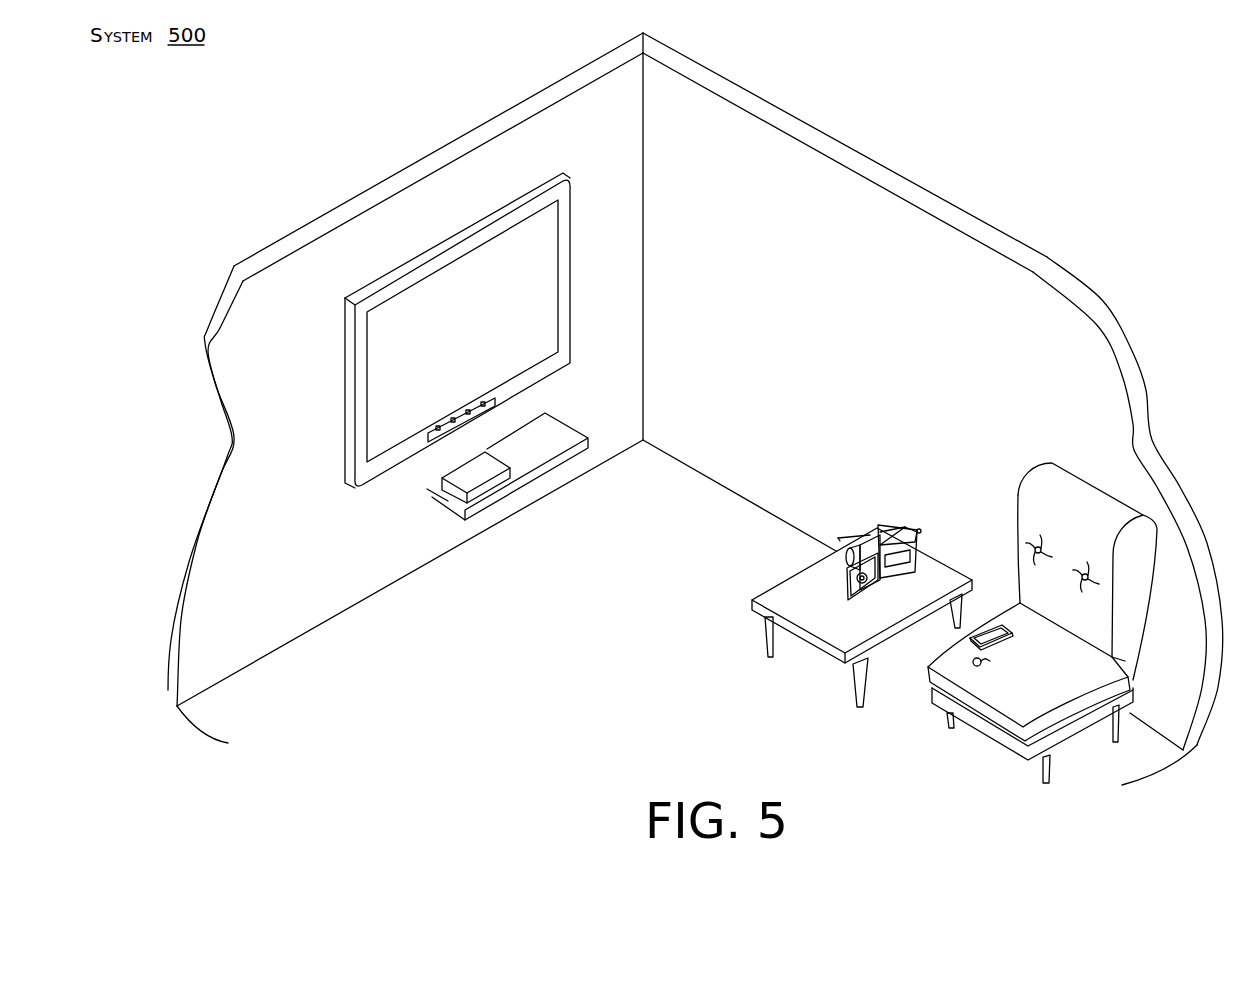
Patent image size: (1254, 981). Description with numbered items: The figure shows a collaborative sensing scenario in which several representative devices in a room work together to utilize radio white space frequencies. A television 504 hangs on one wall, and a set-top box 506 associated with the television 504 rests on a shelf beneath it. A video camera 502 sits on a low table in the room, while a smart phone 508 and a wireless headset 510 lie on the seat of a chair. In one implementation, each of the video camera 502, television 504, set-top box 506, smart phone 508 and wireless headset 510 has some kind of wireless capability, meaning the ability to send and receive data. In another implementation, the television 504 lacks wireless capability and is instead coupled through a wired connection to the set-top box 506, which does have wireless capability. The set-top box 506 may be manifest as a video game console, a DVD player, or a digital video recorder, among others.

The video camera 502 is at (846, 600).
The television 504 is at (564, 173).
The set-top box 506 is at (448, 503).
The smart phone 508 is at (1010, 632).
The wireless headset 510 is at (981, 666).